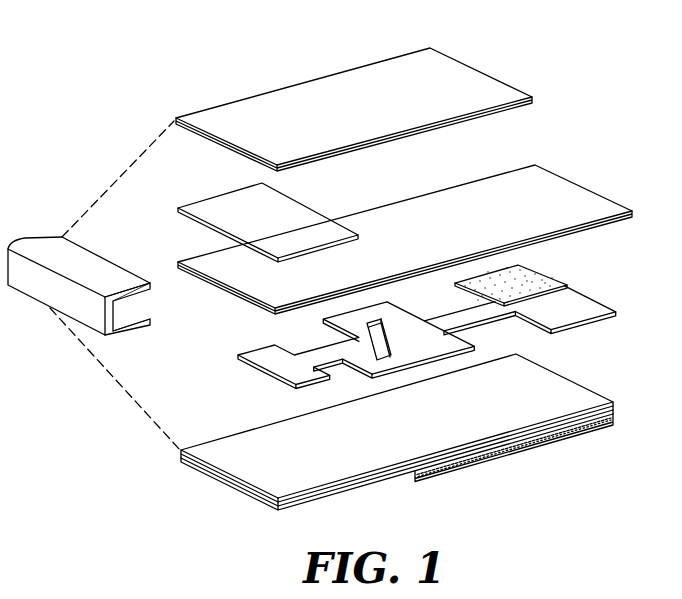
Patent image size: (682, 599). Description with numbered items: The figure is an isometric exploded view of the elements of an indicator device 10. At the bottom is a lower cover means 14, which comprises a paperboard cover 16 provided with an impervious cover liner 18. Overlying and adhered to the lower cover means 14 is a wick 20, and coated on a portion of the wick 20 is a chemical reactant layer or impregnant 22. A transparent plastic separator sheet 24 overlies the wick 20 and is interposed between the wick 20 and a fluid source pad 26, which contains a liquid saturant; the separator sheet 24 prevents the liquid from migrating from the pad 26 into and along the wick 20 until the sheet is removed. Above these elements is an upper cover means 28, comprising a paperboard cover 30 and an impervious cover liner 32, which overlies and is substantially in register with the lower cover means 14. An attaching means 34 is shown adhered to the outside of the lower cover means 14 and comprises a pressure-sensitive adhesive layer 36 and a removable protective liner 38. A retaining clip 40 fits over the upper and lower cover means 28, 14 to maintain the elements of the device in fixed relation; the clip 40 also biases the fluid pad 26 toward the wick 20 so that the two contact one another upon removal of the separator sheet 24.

The device 10 is at (150, 102).
The lower cover means 14 is at (238, 490).
The paperboard cover 16 is at (296, 506).
The impervious cover liner 18 is at (427, 449).
The wick 20 is at (268, 374).
The chemical reactant layer or impregnant 22 is at (538, 280).
The transparent plastic separator sheet 24 is at (584, 205).
The fluid source pad 26 is at (207, 207).
The upper cover means 28 is at (369, 93).
The paperboard cover 30 is at (394, 72).
The impervious cover liner 32 is at (517, 106).
The attaching means 34 is at (480, 466).
The pressure-sensitive adhesive layer 36 is at (616, 410).
The removable protective liner 38 is at (587, 436).
The retaining clip 40 is at (33, 242).